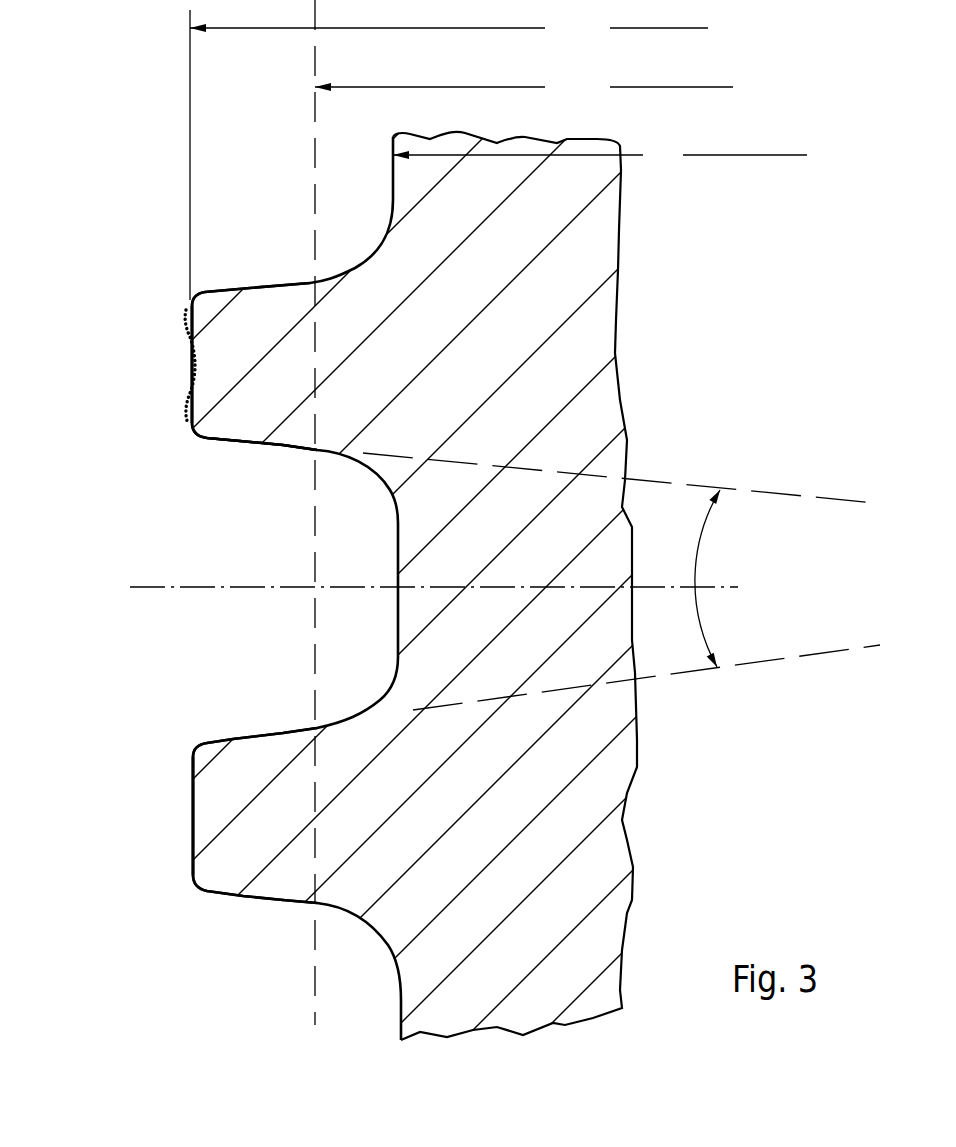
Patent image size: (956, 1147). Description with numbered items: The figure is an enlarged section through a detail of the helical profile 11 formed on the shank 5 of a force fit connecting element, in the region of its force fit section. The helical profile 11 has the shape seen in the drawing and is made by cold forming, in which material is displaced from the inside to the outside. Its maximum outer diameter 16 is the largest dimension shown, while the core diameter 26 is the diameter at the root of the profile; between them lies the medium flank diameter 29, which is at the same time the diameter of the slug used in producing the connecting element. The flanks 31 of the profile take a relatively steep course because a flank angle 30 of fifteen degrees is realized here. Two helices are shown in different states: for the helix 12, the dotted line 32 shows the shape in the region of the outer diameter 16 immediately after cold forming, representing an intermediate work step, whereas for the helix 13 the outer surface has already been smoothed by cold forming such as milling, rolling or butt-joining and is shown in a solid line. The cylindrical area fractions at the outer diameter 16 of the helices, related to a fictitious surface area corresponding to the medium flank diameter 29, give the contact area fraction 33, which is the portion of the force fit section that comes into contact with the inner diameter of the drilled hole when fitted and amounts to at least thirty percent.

The shank 5 is at (520, 338).
The helical profile 11 is at (258, 277).
The helix 12 is at (238, 345).
The helix 13 is at (233, 793).
The maximum outer diameter 16 is at (449, 154).
The core diameter 26 is at (600, 156).
The medium flank diameter 29 is at (524, 512).
The flank angle 30 is at (697, 607).
The flanks 31 is at (181, 459).
The dotted line 32 is at (183, 323).
The contact area fraction 33 is at (190, 377).